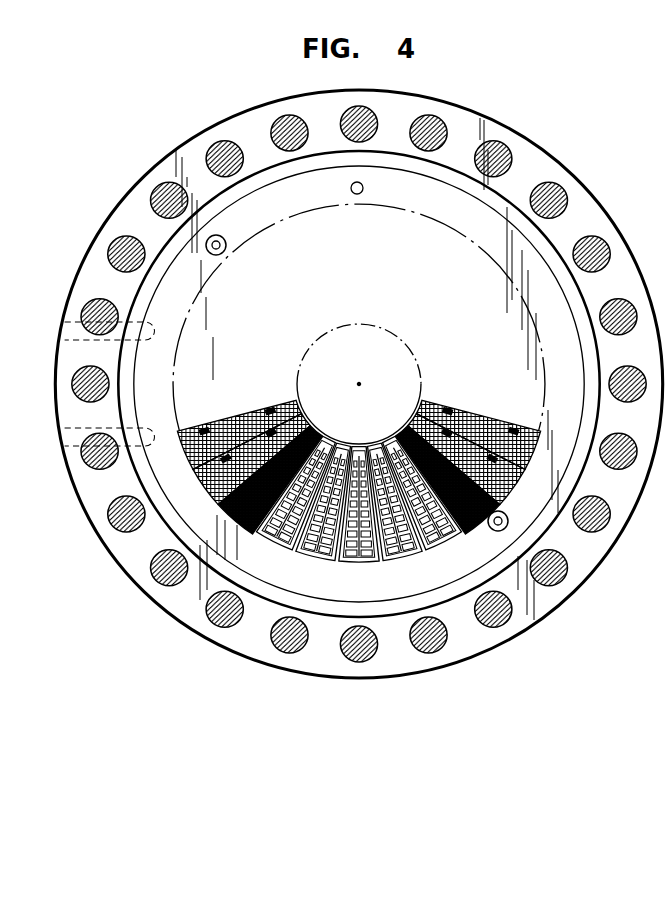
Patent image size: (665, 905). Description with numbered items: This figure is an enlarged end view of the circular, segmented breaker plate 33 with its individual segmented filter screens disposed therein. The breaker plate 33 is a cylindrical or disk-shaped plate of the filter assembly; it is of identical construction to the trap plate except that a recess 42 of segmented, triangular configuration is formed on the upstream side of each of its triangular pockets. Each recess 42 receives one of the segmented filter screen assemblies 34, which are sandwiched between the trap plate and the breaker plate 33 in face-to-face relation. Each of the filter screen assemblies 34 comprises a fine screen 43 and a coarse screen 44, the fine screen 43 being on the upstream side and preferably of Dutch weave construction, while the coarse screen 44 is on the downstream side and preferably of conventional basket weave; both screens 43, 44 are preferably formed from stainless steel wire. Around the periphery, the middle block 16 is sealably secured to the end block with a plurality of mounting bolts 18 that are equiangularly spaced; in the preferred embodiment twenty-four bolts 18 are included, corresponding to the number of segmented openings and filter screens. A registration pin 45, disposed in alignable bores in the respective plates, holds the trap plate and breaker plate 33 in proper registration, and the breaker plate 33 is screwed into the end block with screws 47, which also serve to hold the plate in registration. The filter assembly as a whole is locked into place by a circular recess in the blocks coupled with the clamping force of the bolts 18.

The middle block 16 is at (541, 147).
The mounting bolts 18 is at (591, 243).
The breaker plate 33 is at (425, 190).
The filter screen assemblies 34 is at (233, 505).
The recess 42 is at (404, 556).
The fine screen 43 is at (271, 410).
The coarse screen 44 is at (233, 413).
The registration pin 45 is at (357, 195).
The screws 47 is at (227, 250).